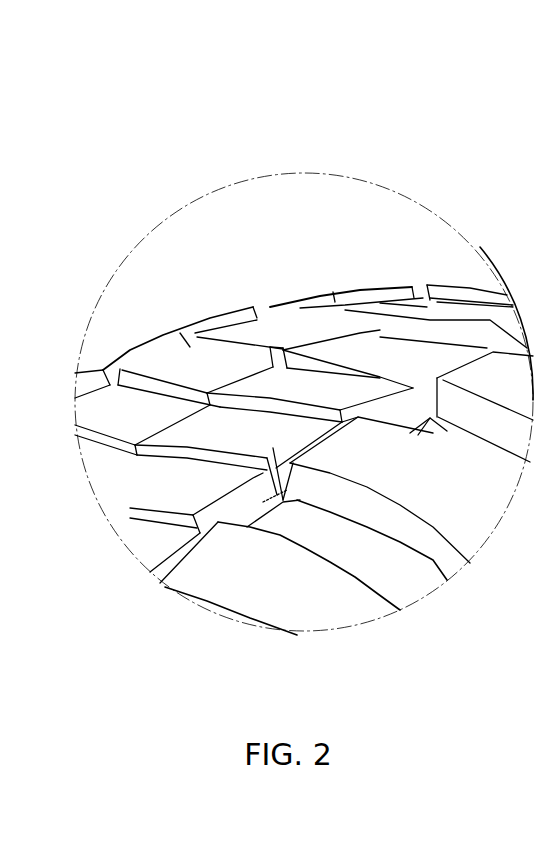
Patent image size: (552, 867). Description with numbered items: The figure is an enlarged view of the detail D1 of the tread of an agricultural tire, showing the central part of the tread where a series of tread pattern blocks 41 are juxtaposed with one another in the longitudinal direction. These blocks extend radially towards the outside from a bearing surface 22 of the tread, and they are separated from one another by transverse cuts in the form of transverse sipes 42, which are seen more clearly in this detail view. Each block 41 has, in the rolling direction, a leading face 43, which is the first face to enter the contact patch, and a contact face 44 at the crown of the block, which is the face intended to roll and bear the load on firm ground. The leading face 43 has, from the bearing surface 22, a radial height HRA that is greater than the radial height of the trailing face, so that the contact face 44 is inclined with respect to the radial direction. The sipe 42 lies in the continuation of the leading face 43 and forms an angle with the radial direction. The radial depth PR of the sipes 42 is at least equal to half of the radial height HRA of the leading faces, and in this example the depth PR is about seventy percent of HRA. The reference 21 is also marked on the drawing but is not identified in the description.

The detail D1 is at (352, 170).
The tread block base 21 is at (180, 330).
The bearing surface 22 is at (470, 447).
The tread pattern block 41 is at (193, 378).
The transverse sipe 42 is at (418, 412).
The leading face 43 is at (316, 320).
The contact face 44 is at (262, 322).
The radial depth of the sipes PR is at (300, 437).
The radial height of the leading face HRA is at (428, 320).